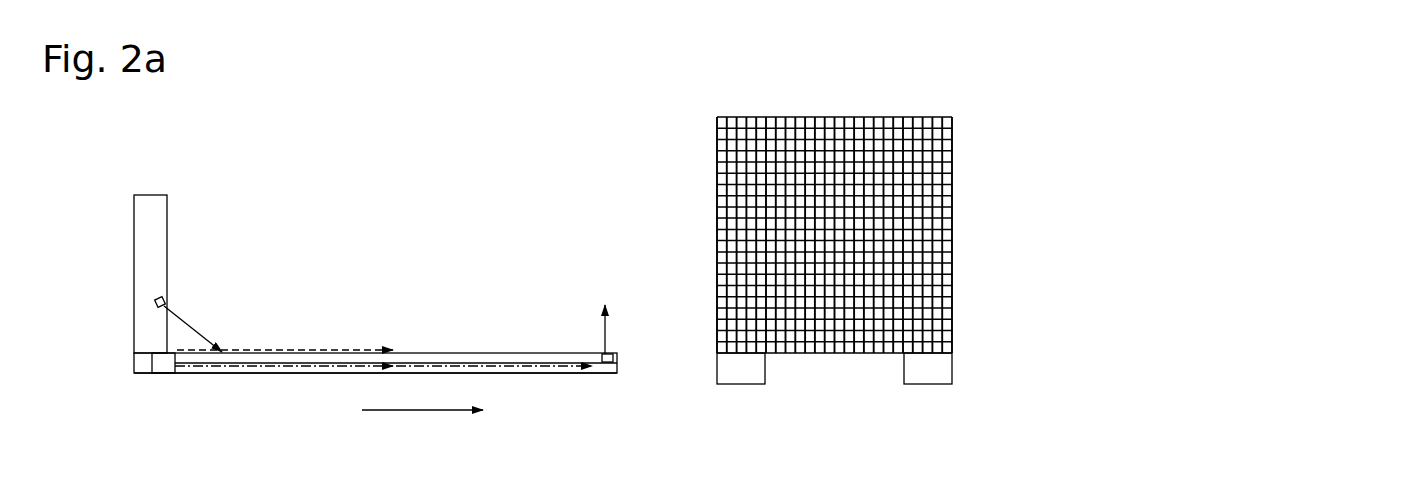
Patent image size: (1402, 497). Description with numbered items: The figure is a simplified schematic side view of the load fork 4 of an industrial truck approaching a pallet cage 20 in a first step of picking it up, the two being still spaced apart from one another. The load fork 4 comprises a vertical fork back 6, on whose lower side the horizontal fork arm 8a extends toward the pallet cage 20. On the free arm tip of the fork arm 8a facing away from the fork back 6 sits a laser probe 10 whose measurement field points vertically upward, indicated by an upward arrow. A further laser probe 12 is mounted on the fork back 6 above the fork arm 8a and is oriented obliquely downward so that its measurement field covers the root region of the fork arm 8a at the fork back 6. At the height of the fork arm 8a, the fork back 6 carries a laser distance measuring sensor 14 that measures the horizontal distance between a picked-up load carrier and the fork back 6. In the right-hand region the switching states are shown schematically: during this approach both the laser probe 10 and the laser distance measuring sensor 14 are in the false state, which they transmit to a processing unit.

The load fork 4 is at (222, 235).
The fork back 6 is at (153, 210).
The fork arm 8a is at (452, 353).
The laser probe 10 is at (613, 358).
The laser probe 12 is at (168, 302).
The laser distance measuring sensor 14 is at (163, 366).
The pallet cage 20 is at (915, 203).